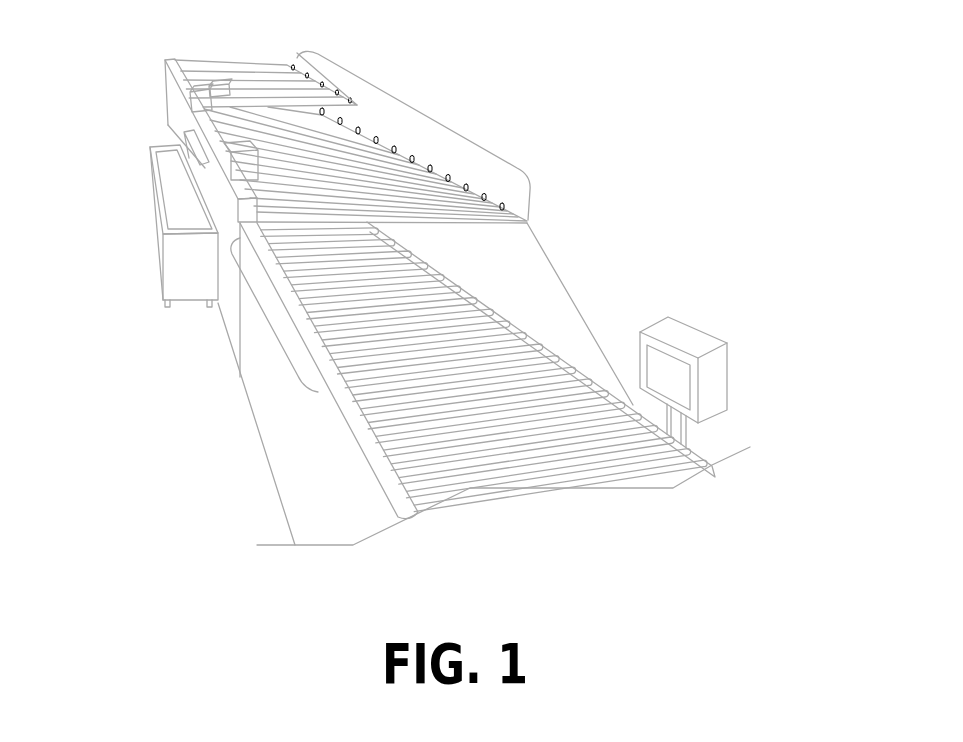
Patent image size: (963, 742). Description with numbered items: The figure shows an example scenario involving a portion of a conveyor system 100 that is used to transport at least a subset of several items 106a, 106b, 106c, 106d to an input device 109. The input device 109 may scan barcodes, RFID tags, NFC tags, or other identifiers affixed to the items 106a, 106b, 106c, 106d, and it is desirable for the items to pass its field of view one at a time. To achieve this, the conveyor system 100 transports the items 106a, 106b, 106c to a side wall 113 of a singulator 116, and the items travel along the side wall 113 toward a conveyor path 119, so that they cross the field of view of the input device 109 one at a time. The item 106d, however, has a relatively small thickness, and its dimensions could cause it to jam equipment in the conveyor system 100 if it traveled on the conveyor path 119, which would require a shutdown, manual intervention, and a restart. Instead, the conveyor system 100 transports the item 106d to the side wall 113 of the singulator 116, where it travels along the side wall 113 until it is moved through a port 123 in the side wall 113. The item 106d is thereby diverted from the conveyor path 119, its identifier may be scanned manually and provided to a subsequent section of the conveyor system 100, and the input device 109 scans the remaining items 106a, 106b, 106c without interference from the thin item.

The conveyor system 100 is at (574, 122).
The item 106a is at (221, 83).
The item 106b is at (180, 79).
The item 106c is at (232, 146).
The item 106d is at (190, 143).
The input device 109 is at (667, 370).
The side wall 113 is at (208, 190).
The singulator 116 is at (430, 118).
The conveyor path 119 is at (322, 407).
The port 123 is at (205, 170).